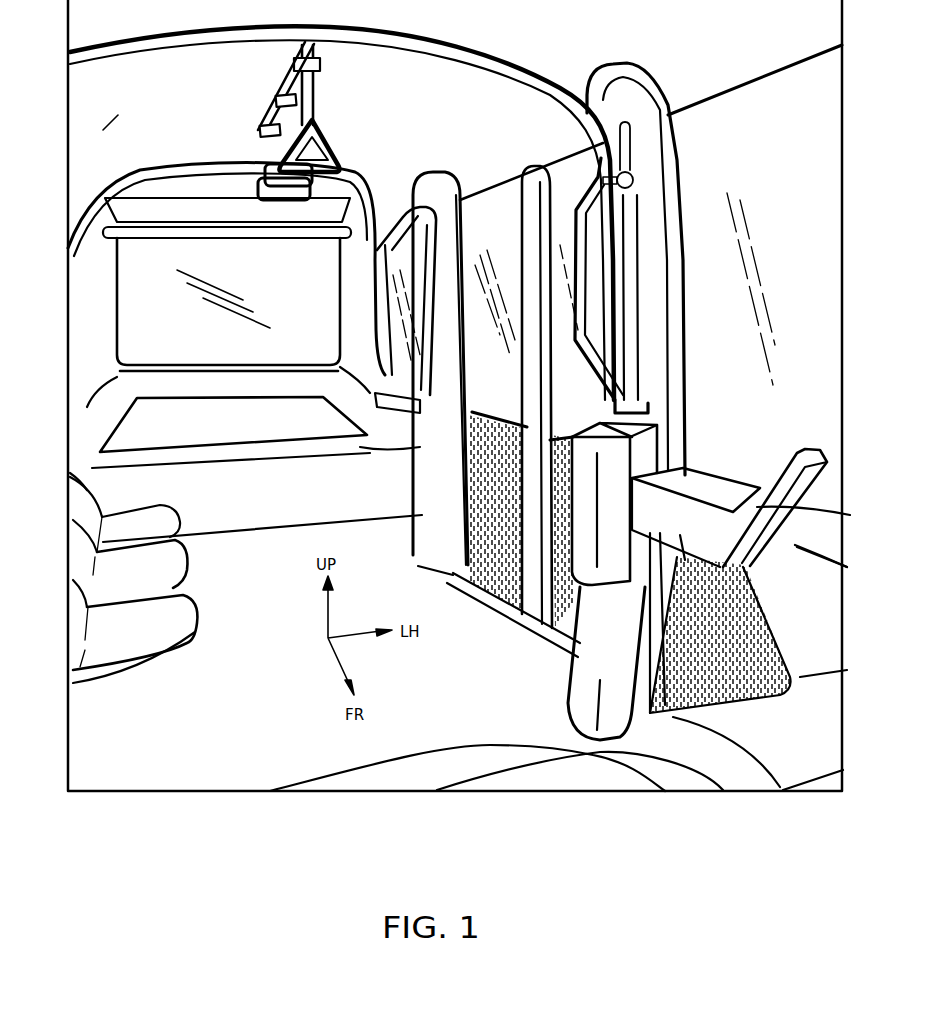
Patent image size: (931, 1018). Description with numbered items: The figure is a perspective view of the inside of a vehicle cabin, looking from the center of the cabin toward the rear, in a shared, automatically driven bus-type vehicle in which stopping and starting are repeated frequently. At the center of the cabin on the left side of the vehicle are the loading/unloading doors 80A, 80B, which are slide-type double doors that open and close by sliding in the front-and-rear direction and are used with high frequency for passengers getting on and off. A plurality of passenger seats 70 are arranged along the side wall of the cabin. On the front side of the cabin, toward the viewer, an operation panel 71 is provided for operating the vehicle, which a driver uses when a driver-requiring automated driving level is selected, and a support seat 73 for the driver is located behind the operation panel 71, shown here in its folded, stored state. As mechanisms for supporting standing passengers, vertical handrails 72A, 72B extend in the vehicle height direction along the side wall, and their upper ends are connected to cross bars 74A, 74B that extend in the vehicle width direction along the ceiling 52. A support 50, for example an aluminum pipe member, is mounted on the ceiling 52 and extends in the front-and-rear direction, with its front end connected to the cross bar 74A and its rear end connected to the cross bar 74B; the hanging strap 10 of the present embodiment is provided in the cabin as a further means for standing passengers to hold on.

The hanging strap 10 is at (337, 134).
The support 50 is at (257, 150).
The ceiling 52 is at (103, 130).
The passenger seats 70 is at (217, 413).
The operation panel 71 is at (770, 480).
The vertical handrail 72A is at (617, 347).
The vertical handrail 72B is at (433, 347).
The support seat 73 is at (580, 537).
The cross bar 74A is at (360, 45).
The cross bar 74B is at (158, 170).
The loading/unloading door 80A is at (567, 183).
The loading/unloading door 80B is at (497, 207).